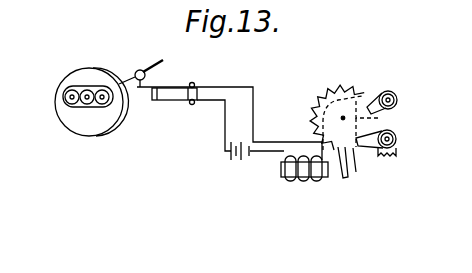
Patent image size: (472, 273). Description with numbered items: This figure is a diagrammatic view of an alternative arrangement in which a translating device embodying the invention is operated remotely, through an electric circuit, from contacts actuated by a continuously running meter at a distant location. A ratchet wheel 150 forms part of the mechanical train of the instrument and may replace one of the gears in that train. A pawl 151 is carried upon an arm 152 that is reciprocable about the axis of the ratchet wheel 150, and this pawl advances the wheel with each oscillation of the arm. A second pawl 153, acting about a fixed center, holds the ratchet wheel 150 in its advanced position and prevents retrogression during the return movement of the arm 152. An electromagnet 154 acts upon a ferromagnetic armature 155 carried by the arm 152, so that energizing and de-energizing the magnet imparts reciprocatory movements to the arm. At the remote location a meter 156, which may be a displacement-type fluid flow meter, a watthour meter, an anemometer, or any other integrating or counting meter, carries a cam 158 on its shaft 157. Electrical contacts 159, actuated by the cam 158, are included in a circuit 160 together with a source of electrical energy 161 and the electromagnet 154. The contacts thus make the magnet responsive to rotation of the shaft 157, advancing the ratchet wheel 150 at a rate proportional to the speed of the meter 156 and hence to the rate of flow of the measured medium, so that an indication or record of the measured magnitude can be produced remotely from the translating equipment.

The ratchet wheel 150 is at (342, 87).
The pawl 151 is at (395, 112).
The arm 152 is at (381, 92).
The pawl 153 is at (372, 150).
The electromagnet 154 is at (281, 167).
The ferromagnetic armature 155 is at (345, 180).
The meter 156 is at (56, 93).
The shaft 157 is at (159, 55).
The cam 158 is at (138, 69).
The electrical contacts 159 is at (166, 101).
The circuit 160 is at (226, 123).
The source of electrical energy 161 is at (237, 163).